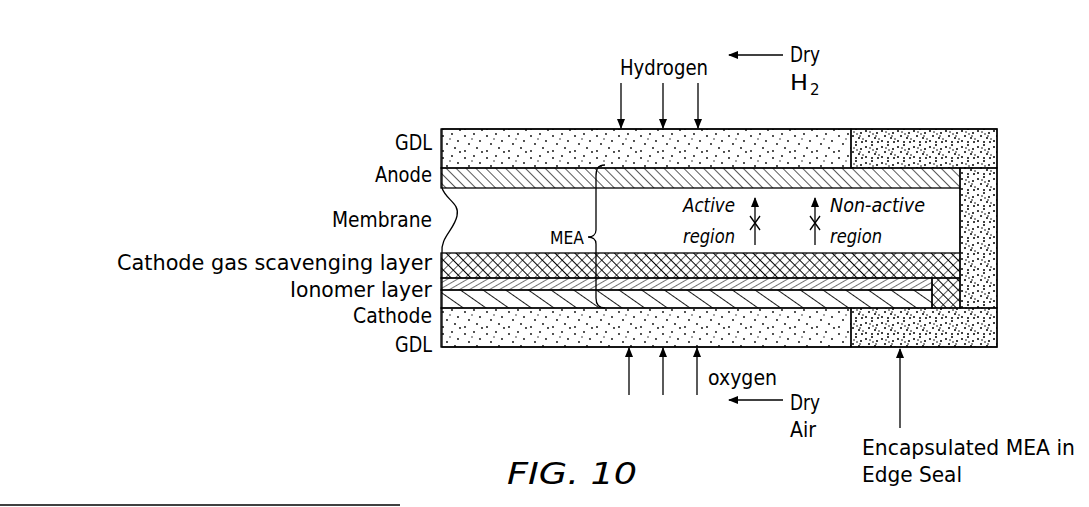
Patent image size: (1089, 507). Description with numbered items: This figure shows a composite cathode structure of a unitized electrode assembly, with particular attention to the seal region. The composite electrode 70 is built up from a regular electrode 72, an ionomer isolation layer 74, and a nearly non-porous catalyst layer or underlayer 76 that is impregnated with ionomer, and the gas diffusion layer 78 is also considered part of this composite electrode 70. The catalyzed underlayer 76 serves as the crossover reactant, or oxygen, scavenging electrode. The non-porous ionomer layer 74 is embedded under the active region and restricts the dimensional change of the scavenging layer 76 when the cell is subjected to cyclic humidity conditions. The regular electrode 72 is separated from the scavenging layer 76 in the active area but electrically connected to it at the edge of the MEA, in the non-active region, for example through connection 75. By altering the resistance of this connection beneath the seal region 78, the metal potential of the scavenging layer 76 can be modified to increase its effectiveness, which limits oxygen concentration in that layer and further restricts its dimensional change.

The composite electrode 70 is at (561, 327).
The regular electrode 72 is at (553, 298).
The ionomer isolation layer 74 is at (498, 288).
The connection 75 is at (960, 272).
The catalyst layer or underlayer 76 is at (465, 270).
The gas diffusion layer 78 is at (593, 335).